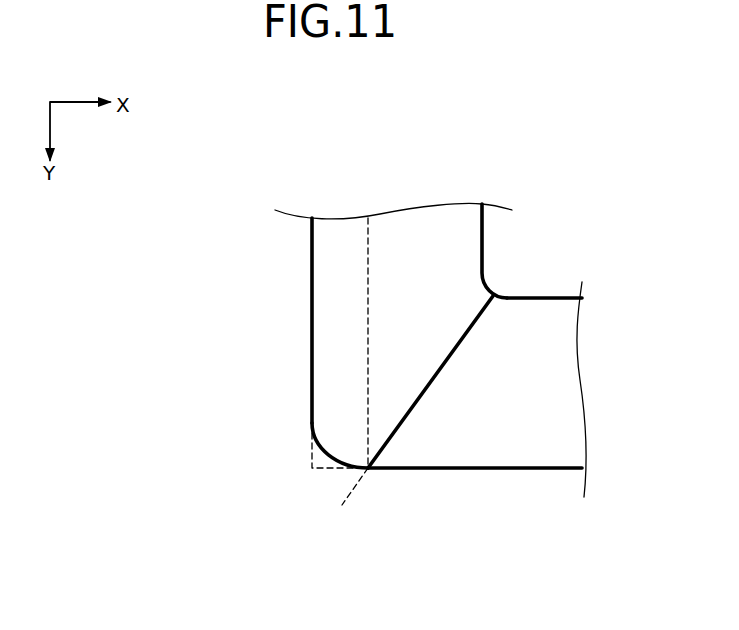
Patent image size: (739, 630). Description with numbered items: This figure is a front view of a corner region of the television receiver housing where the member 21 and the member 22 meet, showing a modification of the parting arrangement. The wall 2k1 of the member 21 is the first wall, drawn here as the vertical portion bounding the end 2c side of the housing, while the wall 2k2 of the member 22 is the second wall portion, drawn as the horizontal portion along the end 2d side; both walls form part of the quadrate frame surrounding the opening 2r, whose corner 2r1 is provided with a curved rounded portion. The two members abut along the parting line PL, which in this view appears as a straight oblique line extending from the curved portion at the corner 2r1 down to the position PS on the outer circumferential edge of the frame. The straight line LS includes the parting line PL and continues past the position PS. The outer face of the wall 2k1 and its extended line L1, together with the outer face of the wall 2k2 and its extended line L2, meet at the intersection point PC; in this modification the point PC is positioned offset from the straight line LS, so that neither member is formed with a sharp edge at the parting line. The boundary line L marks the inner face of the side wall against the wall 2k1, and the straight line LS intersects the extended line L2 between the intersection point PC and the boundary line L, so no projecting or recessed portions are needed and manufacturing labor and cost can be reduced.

The member 21 is at (306, 268).
The member 22 is at (554, 480).
The end 2c is at (312, 358).
The end 2d is at (438, 471).
The opening 2r is at (563, 296).
The corner of the opening 2r1 is at (489, 280).
The wall 2k1 is at (390, 313).
The wall 2k2 is at (520, 455).
The parting line PL is at (406, 403).
The boundary line L is at (372, 247).
The extended line L1 is at (310, 453).
The extended line L2 is at (330, 470).
The intersection point PC is at (311, 470).
The position PS is at (369, 470).
The straight line LS is at (356, 487).